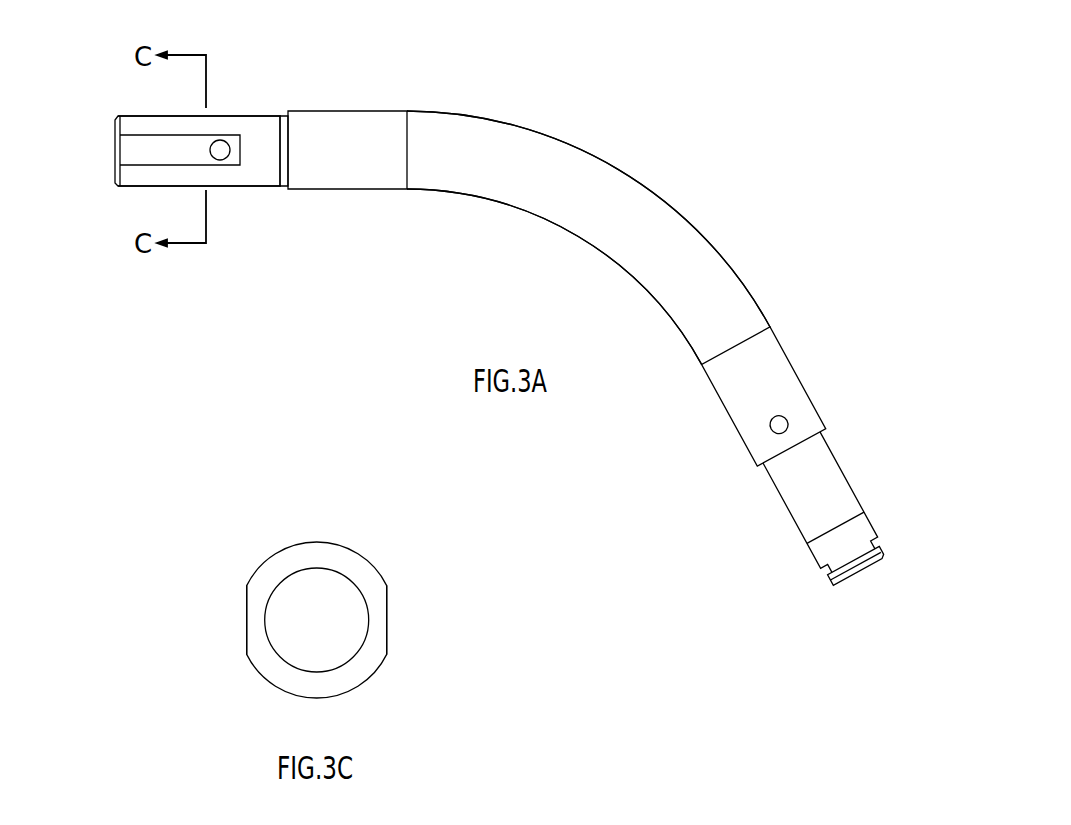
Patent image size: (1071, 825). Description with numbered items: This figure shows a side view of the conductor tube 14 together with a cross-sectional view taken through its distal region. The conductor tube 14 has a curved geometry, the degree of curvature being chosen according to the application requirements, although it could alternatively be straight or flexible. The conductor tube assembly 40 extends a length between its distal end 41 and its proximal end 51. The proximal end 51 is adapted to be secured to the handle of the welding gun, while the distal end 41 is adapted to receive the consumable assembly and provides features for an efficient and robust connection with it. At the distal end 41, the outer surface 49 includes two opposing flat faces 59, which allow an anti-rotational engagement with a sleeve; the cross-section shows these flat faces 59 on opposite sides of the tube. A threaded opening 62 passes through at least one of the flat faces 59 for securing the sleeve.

In FIG. 3A, the conductor tube 14 is at (638, 218).
In FIG. 3A, the conductor tube assembly 40 is at (713, 237).
In FIG. 3A, the distal end 41 is at (113, 113).
In FIG. 3A, the outer surface 49 is at (137, 116).
In FIG. 3C, the outer surface 49 is at (350, 550).
In FIG. 3A, the proximal end 51 is at (889, 534).
In FIG. 3A, the flat faces 59 is at (125, 152).
In FIG. 3C, the flat faces 59 is at (247, 618).
In FIG. 3A, the threaded opening 62 is at (221, 140).